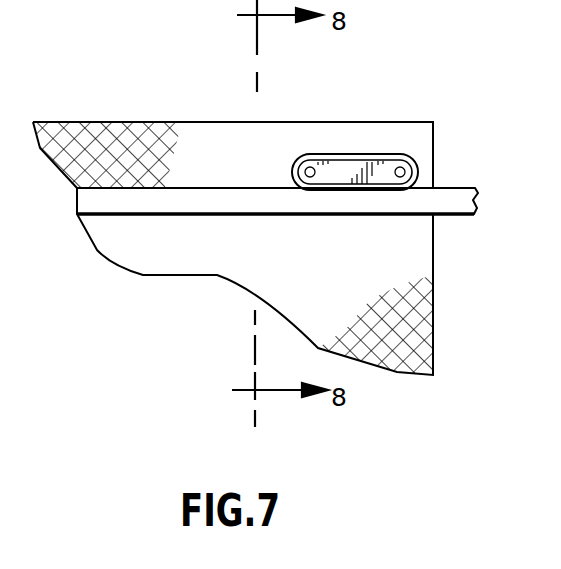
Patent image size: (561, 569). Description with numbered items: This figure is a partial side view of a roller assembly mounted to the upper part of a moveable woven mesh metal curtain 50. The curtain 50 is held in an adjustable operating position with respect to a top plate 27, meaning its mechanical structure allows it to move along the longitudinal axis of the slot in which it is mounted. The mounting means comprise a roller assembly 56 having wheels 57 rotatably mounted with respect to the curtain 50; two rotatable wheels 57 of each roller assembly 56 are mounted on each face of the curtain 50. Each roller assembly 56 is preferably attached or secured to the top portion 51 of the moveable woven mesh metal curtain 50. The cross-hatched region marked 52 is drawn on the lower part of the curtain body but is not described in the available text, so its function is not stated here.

The top plate 27 is at (110, 197).
The moveable woven mesh metal curtain 50 is at (357, 272).
The top portion 51 is at (91, 138).
The hatched portion 52 is at (410, 339).
The roller assembly 56 is at (385, 125).
The wheels 57 is at (313, 152).